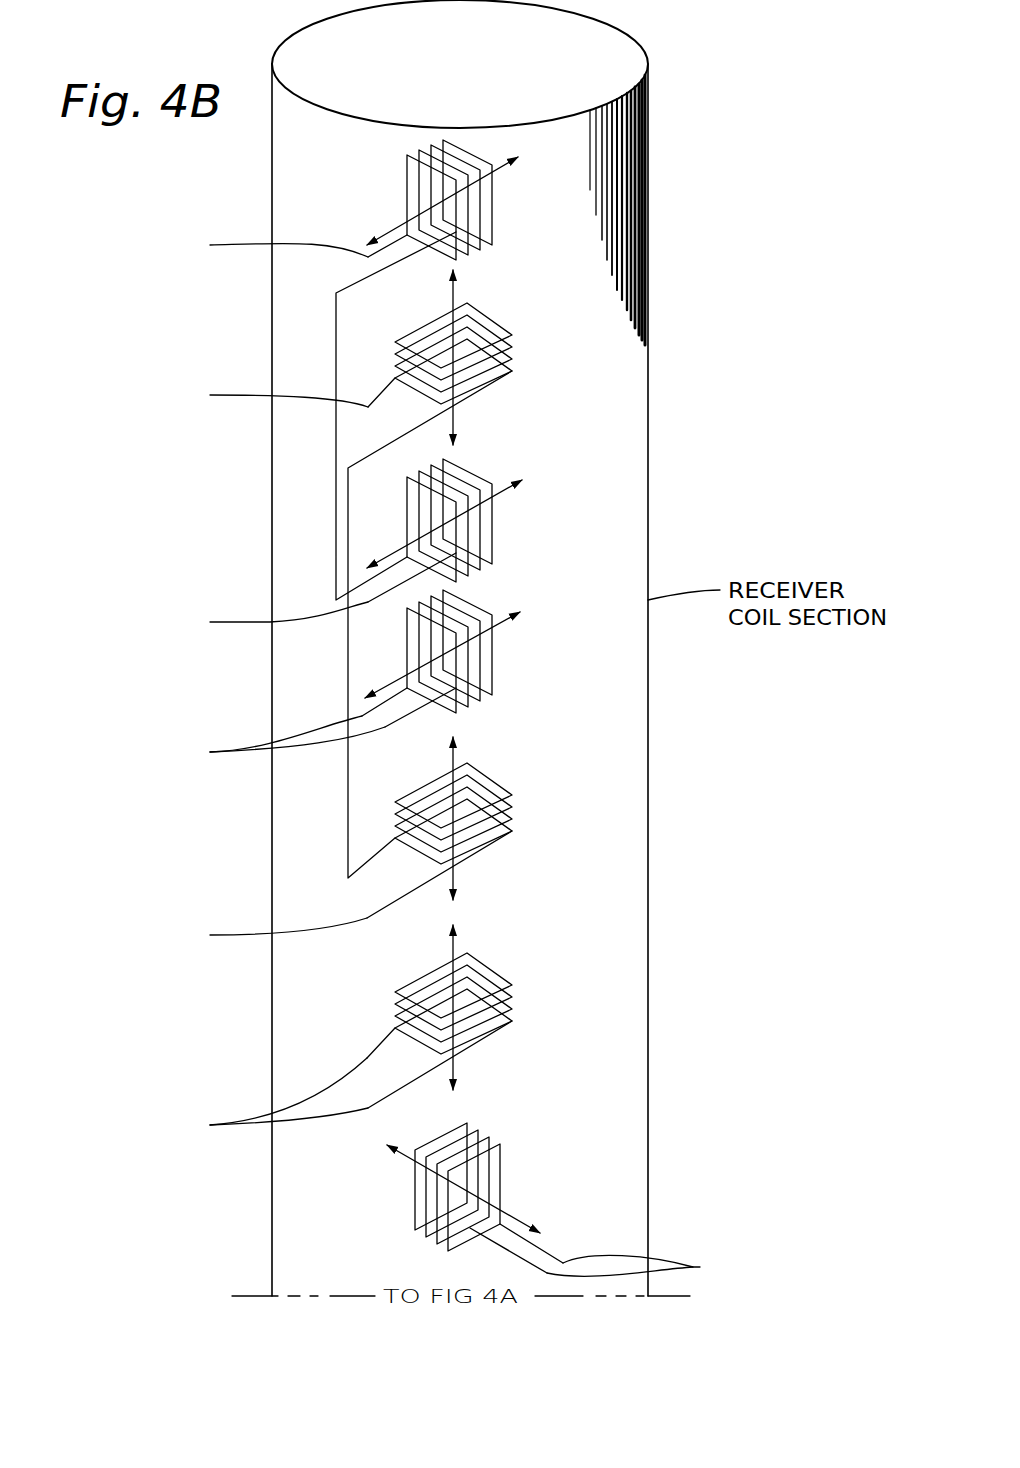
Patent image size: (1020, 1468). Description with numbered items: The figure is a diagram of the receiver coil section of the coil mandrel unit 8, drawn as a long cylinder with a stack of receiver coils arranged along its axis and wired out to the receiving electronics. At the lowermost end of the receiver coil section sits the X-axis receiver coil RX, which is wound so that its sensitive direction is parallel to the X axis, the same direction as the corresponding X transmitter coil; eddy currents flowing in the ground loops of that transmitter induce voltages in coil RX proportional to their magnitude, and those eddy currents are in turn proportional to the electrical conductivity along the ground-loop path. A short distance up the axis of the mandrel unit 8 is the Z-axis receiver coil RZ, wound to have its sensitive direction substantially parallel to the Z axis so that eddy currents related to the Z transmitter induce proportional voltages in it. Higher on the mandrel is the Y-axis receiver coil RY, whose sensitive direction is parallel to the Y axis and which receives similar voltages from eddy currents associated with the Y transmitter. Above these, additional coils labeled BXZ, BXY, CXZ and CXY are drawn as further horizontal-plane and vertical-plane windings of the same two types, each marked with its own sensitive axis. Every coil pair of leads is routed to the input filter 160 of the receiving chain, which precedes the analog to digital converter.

The coil mandrel unit 8 is at (744, 464).
The input filter 160 is at (443, 749).
The C XY coil CXY is at (407, 175).
The C XZ coil CXZ is at (478, 310).
The B XY coil BXY is at (494, 530).
The Y-axis receiver coil RY is at (494, 663).
The B XZ coil BXZ is at (483, 780).
The Z-axis receiver coil RZ is at (487, 968).
The X-axis receiver coil RX is at (413, 1203).